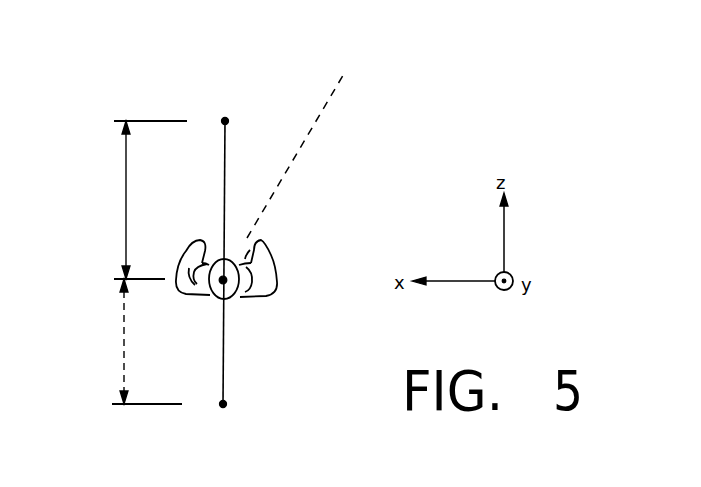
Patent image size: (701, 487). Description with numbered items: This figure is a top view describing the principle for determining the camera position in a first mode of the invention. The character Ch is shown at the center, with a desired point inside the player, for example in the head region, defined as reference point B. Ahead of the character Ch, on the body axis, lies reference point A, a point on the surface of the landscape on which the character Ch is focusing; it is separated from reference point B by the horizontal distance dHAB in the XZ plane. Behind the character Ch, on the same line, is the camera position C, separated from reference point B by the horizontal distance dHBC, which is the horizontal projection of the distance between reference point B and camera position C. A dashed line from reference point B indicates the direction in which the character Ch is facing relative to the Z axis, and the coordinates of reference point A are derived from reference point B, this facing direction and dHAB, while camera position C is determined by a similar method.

The reference point A is at (226, 119).
The reference point B is at (224, 281).
The camera position C is at (226, 404).
The character Ch is at (274, 262).
The horizontal distance between reference point A and reference point B dHAB is at (93, 200).
The horizontal distance between reference point B and camera position C dHBC is at (91, 341).